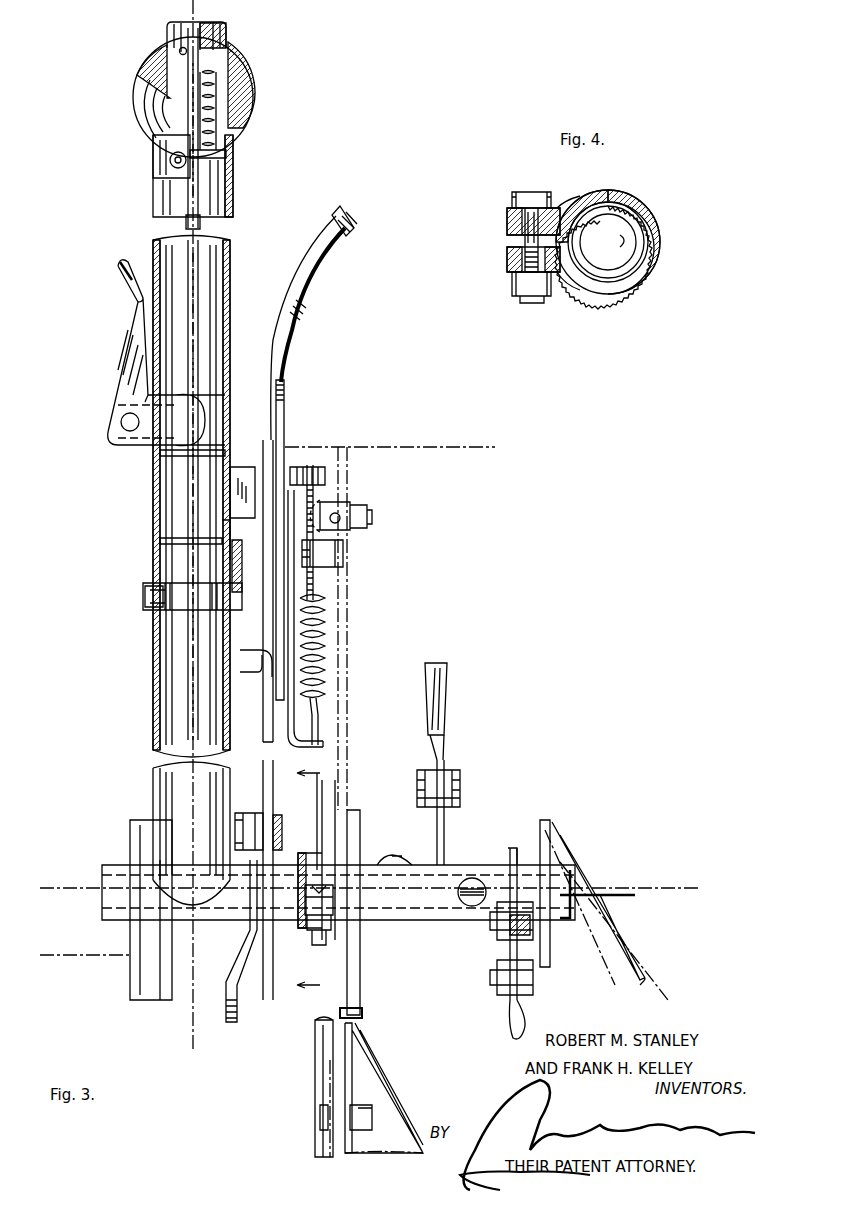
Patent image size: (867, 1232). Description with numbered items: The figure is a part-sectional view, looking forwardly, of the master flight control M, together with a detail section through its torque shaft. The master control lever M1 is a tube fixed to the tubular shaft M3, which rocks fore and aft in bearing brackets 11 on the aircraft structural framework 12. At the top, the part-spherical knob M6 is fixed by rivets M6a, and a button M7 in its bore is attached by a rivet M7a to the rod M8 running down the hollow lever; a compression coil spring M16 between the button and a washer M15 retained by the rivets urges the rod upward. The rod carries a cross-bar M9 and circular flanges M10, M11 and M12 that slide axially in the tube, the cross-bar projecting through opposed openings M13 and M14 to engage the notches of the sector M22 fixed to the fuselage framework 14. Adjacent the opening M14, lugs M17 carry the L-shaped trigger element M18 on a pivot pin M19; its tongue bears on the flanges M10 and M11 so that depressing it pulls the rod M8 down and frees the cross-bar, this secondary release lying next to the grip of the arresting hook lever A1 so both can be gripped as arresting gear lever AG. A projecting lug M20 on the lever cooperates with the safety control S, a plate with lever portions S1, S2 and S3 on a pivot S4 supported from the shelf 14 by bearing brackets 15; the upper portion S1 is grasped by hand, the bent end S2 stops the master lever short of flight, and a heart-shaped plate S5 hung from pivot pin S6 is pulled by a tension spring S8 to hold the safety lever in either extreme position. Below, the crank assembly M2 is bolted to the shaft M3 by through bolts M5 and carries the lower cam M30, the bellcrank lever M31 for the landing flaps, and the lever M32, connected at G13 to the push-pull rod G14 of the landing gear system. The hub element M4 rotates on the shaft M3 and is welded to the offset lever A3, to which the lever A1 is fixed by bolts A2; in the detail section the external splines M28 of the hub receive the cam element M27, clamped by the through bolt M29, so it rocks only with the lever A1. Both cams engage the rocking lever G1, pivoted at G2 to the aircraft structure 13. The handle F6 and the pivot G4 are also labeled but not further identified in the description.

In FIG. 3, the manual control unit M is at (126, 143).
In FIG. 3, the master control lever M1 is at (232, 262).
In FIG. 3, the crank assembly M2 is at (499, 856).
In FIG. 3, the tubular shaft M3 is at (570, 855).
In FIG. 4, the tubular shaft M3 is at (658, 255).
In FIG. 3, the hub element M4 is at (292, 922).
In FIG. 4, the hub element M4 is at (608, 293).
In FIG. 3, the through bolts M5 is at (410, 862).
In FIG. 3, the knob portion M6 is at (255, 75).
In FIG. 3, the rivets M6a is at (168, 160).
In FIG. 3, the button M7 is at (222, 30).
In FIG. 3, the rivet M7a is at (179, 49).
In FIG. 3, the rod M8 is at (186, 222).
In FIG. 3, the cross-bar M9 is at (145, 597).
In FIG. 3, the circular flange M10 is at (230, 383).
In FIG. 3, the circular flange M11 is at (165, 455).
In FIG. 3, the circular flange M12 is at (225, 545).
In FIG. 3, the opening M13 is at (153, 572).
In FIG. 3, the opening M14 is at (150, 395).
In FIG. 3, the washer M15 is at (235, 152).
In FIG. 3, the compression coil spring M16 is at (245, 110).
In FIG. 3, the projecting lugs M17 is at (150, 440).
In FIG. 3, the trigger element M18 is at (138, 312).
In FIG. 3, the pivot pin M19 is at (120, 422).
In FIG. 3, the projecting lug M20 is at (238, 465).
In FIG. 3, the sector M22 is at (215, 540).
In FIG. 3, the cam element M27 is at (350, 790).
In FIG. 4, the cam element M27 is at (592, 295).
In FIG. 4, the external splines M28 is at (645, 210).
In FIG. 3, the through bolt M29 is at (320, 950).
In FIG. 4, the through bolt M29 is at (515, 298).
In FIG. 3, the lower cam M30 is at (360, 995).
In FIG. 3, the bellcrank lever M31 is at (448, 825).
In FIG. 3, the lever M32 is at (548, 830).
In FIG. 3, the arresting gear lever A1 is at (315, 265).
In FIG. 3, the bolts A2 is at (282, 835).
In FIG. 3, the offset lever portion A3 is at (237, 1022).
In FIG. 3, the arresting gear lever AG is at (371, 224).
In FIG. 3, the safety control S is at (296, 394).
In FIG. 3, the lever portion S1 is at (285, 432).
In FIG. 3, the bent terminal portion S2 is at (248, 570).
In FIG. 3, the lever portion S3 is at (258, 660).
In FIG. 3, the pivot S4 is at (300, 582).
In FIG. 3, the heart-shaped plate S5 is at (315, 500).
In FIG. 3, the pivot pin S6 is at (323, 478).
In FIG. 3, the tension spring S8 is at (325, 636).
In FIG. 3, the rocking lever G1 is at (345, 668).
In FIG. 3, the pivot G2 is at (315, 1090).
In FIG. 3, the pivot G4 is at (340, 523).
In FIG. 3, the pivotal connection G13 is at (492, 925).
In FIG. 3, the push-pull connection G14 is at (540, 935).
In FIG. 3, the handle F6 is at (438, 700).
In FIG. 3, the bearing brackets 11 is at (140, 862).
In FIG. 3, the aircraft structural framework 12 is at (130, 950).
In FIG. 3, the aircraft structure 13 is at (388, 1108).
In FIG. 3, the fuselage framework 14 is at (360, 445).
In FIG. 3, the bearing brackets 15 is at (350, 500).